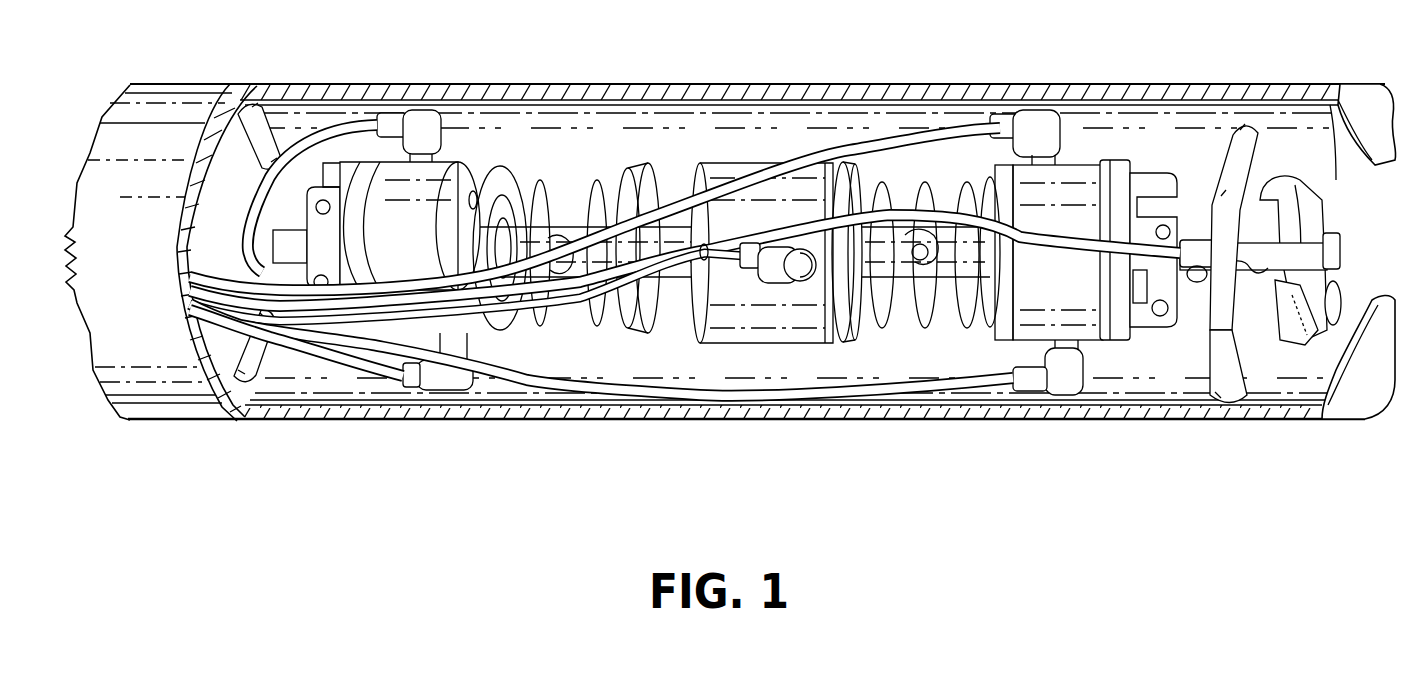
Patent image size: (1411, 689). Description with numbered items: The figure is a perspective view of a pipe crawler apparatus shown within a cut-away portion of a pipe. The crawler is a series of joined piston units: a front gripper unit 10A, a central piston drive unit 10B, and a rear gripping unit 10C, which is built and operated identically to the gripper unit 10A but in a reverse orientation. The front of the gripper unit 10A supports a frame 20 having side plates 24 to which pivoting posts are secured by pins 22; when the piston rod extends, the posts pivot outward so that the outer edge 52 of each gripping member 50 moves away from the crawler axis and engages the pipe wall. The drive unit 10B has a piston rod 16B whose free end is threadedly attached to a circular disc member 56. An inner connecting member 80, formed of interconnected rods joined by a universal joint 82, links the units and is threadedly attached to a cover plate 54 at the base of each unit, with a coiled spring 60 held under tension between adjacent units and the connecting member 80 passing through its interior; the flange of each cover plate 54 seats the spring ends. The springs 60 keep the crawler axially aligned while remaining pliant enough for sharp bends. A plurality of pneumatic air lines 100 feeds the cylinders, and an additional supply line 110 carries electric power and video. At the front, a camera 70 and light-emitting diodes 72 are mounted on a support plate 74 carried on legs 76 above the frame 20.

The gripper unit 10A is at (1093, 227).
The piston drive unit 10B is at (800, 224).
The gripping unit 10C is at (440, 230).
The piston rod 16B is at (668, 162).
The frame 20 is at (1113, 177).
The pin 22 is at (1163, 232).
The side plate 24 is at (1165, 133).
The gripping member 50 is at (247, 347).
The outer edge 52 is at (246, 380).
The cover plate 54 is at (507, 148).
The circular disc member 56 is at (642, 160).
The coiled spring 60 is at (945, 188).
The camera 70 is at (1325, 233).
The light-emitting diodes 72 is at (1310, 185).
The support plate 74 is at (1320, 287).
The legs 76 is at (1297, 320).
The connecting member 80 is at (948, 315).
The universal joint 82 is at (907, 325).
The pneumatic air line 100 is at (882, 147).
The supply line 110 is at (1028, 223).